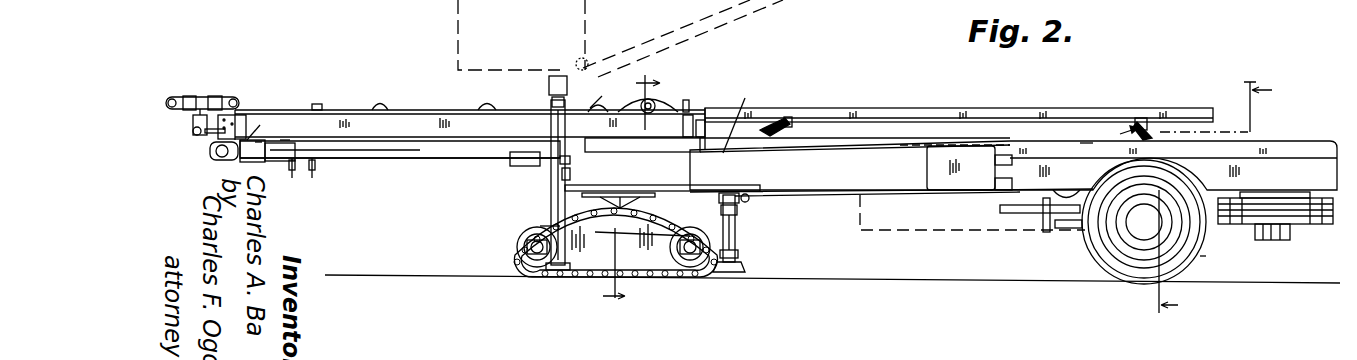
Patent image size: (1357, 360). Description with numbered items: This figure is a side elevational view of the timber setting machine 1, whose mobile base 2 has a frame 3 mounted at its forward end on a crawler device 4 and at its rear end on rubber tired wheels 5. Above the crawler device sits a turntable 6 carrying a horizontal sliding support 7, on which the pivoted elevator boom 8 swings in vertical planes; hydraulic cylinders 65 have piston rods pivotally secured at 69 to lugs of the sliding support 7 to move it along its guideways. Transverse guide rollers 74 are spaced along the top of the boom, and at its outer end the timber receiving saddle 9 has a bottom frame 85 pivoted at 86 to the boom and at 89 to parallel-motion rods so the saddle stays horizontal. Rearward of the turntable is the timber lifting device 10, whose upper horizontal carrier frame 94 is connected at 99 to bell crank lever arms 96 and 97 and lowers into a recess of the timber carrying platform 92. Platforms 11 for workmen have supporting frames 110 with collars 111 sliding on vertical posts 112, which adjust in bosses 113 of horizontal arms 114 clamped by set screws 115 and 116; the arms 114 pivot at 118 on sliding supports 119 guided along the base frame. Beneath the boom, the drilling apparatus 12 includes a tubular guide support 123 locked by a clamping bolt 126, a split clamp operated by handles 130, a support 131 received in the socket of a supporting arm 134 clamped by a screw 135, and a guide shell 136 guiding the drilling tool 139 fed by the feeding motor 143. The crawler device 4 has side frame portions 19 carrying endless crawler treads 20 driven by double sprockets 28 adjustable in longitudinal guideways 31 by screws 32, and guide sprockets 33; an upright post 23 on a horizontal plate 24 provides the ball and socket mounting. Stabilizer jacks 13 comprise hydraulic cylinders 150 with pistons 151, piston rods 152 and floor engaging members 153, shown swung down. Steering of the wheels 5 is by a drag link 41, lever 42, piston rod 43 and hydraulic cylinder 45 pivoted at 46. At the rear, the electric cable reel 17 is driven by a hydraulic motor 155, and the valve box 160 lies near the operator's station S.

The timber setting machine 1 is at (1280, 140).
The mobile base 2 is at (1318, 195).
The frame 3 is at (1033, 170).
The crawler device 4 is at (545, 278).
The rubber tired wheels 5 is at (1220, 258).
The turntable 6 is at (1222, 199).
The sliding support 7 is at (608, 120).
The elevator boom 8 is at (400, 112).
The timber receiving saddle 9 is at (205, 97).
The timber lifting device 10 is at (860, 107).
The platforms 11 is at (460, 25).
The drilling apparatus 12 is at (215, 157).
The stabilizer jacks 13 is at (738, 238).
The electric cable reel 17 is at (1325, 225).
The side frame portions 19 is at (578, 262).
The endless crawler treads 20 is at (512, 251).
The upright post 23 is at (640, 199).
The horizontal plate 24 is at (630, 190).
The double sprocket 28 is at (675, 296).
The longitudinal guideways 31 is at (695, 270).
The screws 32 is at (672, 262).
The guide sprockets 33 is at (518, 278).
The drag link 41 is at (1075, 228).
The lever 42 is at (1048, 220).
The piston rod 43 is at (1028, 220).
The hydraulic cylinder 45 is at (1010, 215).
The pivot of cylinder 46 is at (987, 207).
The hydraulic cylinders 65 is at (655, 140).
The pivotal connection 69 is at (592, 105).
The transverse guide rollers 74 is at (372, 106).
The bottom frame 85 is at (188, 99).
The pivot 86 is at (193, 125).
The pivot 89 is at (194, 133).
The timber carrying platform 92 is at (1080, 143).
The upper horizontal carrier frame 94 is at (963, 107).
The lever arms 96 is at (780, 130).
The lever arms 97 is at (1117, 131).
The pivotal connection 99 is at (786, 118).
The supporting frames 110 is at (548, 196).
The collars 111 is at (540, 167).
The vertical posts 112 is at (549, 98).
The bosses 113 is at (570, 176).
The horizontal arms 114 is at (822, 6).
The set screws 115 is at (570, 160).
The set screws 116 is at (586, 128).
The pivotal mounting 118 is at (932, 143).
The sliding supports 119 is at (970, 155).
The tubular guide support 123 is at (413, 160).
The clamping bolt 126 is at (322, 105).
The handles 130 is at (296, 178).
The support 131 is at (282, 140).
The supporting arm 134 is at (247, 140).
The screw 135 is at (296, 155).
The guide shell 136 is at (255, 142).
The drilling tool 139 is at (210, 150).
The feeding motor 143 is at (240, 120).
The hydraulic cylinders 150 is at (722, 205).
The pistons 151 is at (737, 213).
The piston rods 152 is at (738, 258).
The floor engaging members 153 is at (737, 270).
The hydraulic motor 155 is at (1276, 240).
The valve box 160 is at (698, 118).
The operator's station S is at (686, 100).